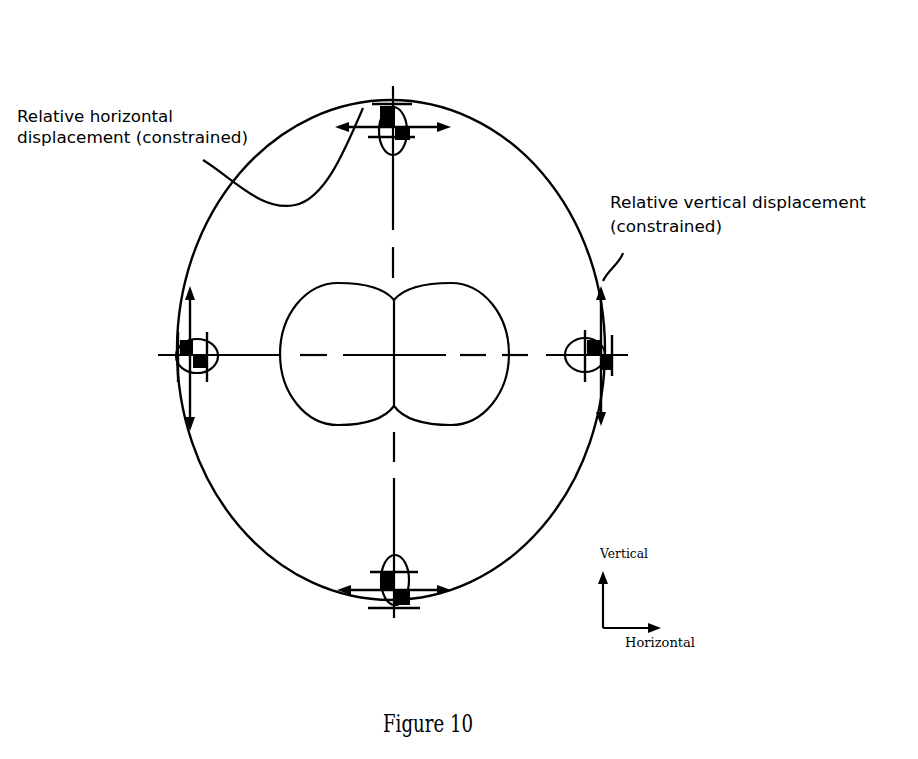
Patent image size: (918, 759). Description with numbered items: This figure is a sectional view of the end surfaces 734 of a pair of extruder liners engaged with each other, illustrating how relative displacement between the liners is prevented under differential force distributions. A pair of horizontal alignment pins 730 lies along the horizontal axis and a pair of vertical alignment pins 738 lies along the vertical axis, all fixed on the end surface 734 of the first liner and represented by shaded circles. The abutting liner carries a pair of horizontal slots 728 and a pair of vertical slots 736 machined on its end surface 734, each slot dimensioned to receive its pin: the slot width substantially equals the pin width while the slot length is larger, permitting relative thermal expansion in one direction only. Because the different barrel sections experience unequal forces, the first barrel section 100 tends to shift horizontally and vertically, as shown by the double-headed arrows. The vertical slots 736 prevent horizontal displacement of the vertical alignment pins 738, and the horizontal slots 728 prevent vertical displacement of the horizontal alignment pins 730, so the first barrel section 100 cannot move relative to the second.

The first barrel section 100 is at (591, 70).
The end surface 734 is at (530, 181).
The horizontal slots 728 is at (178, 345).
The horizontal alignment pins 730 is at (176, 372).
The vertical slots 736 is at (407, 105).
The vertical alignment pins 738 is at (374, 114).